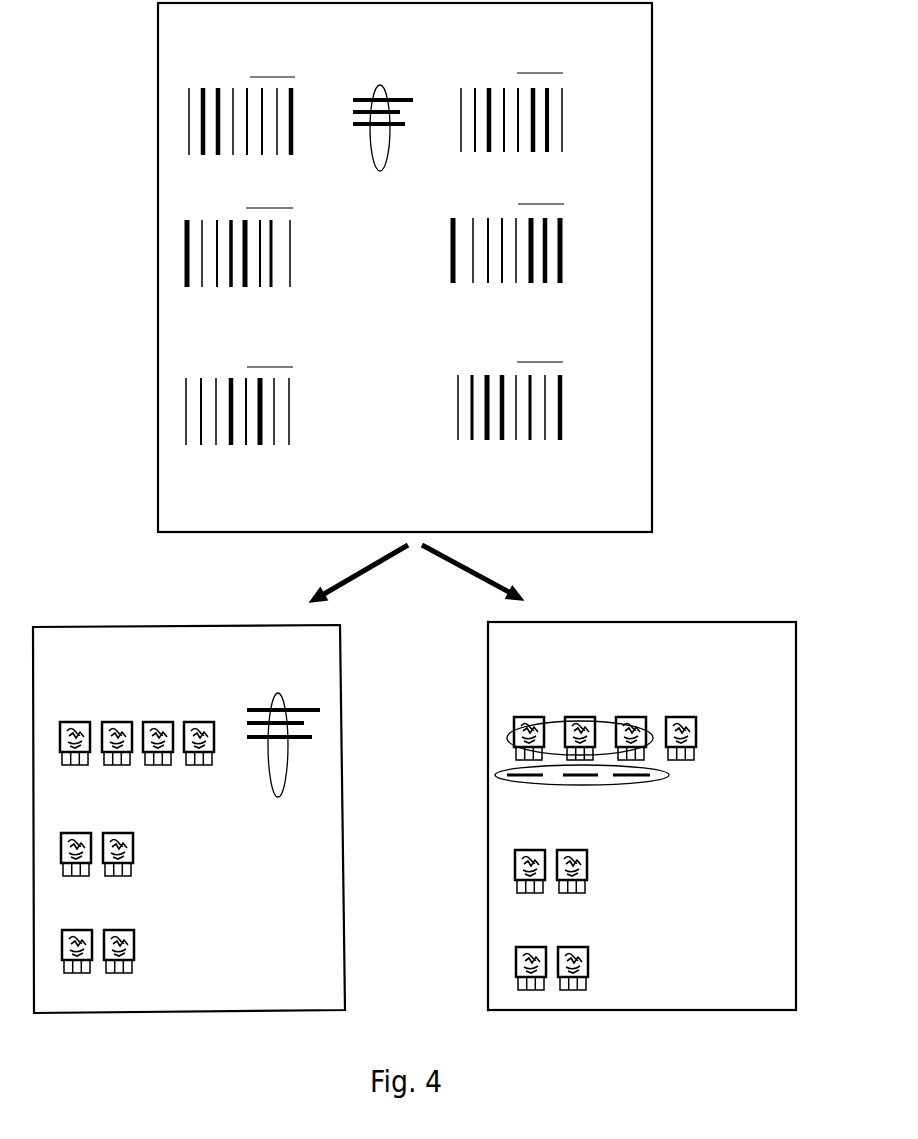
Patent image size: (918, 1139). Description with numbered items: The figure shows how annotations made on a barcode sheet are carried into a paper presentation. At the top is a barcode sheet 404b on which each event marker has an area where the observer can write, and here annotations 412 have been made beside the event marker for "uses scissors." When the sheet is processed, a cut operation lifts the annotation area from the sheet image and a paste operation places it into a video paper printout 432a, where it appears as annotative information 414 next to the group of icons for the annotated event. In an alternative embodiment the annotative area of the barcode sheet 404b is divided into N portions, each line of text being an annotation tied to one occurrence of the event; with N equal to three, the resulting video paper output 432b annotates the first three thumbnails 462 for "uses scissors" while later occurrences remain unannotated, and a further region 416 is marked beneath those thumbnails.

The barcode sheet 404b is at (357, 267).
The annotations 412 is at (383, 168).
The annotative information 414 is at (283, 794).
The bar code region 416 is at (609, 808).
The video paper printout 432a is at (189, 787).
The video paper output 432b is at (600, 777).
The first three thumbnails 462 is at (529, 738).